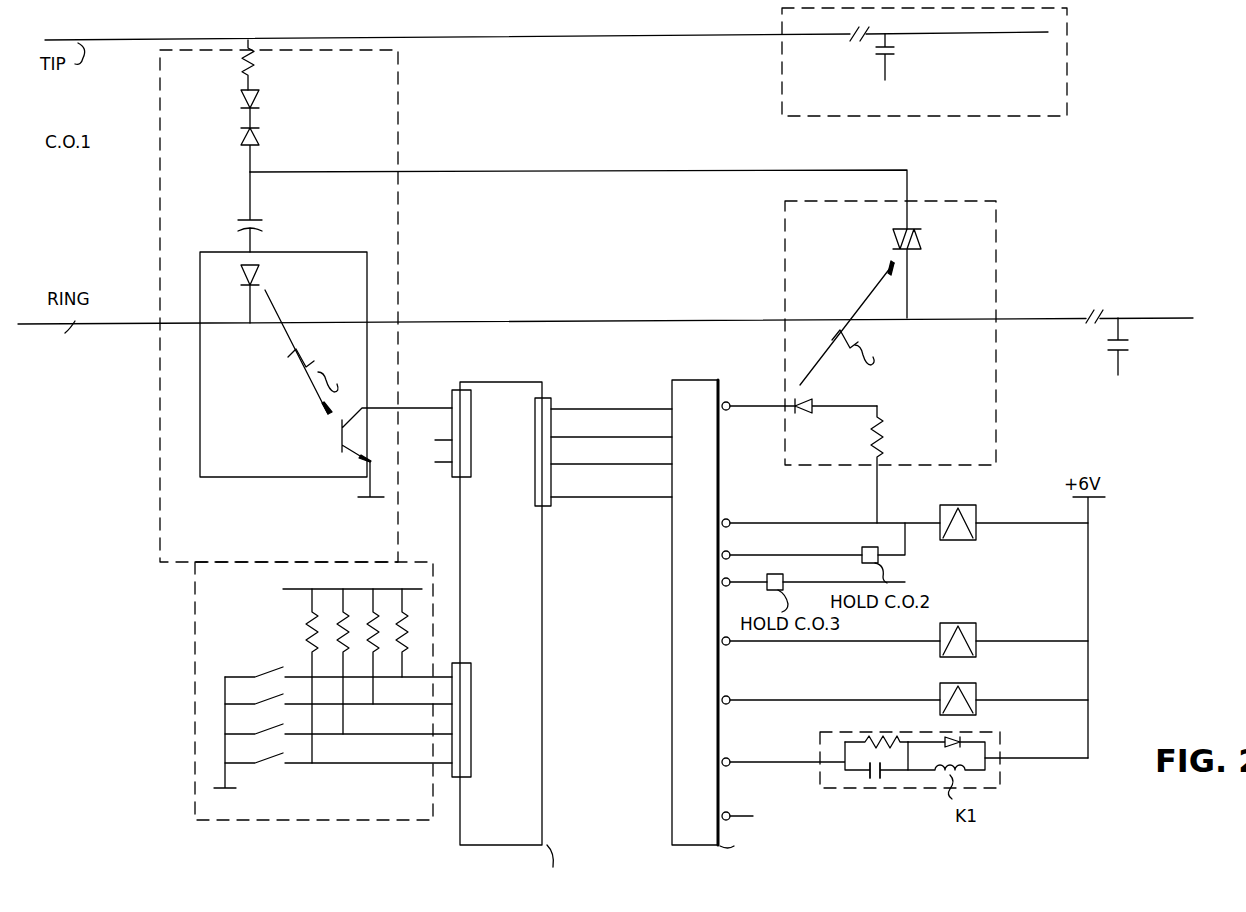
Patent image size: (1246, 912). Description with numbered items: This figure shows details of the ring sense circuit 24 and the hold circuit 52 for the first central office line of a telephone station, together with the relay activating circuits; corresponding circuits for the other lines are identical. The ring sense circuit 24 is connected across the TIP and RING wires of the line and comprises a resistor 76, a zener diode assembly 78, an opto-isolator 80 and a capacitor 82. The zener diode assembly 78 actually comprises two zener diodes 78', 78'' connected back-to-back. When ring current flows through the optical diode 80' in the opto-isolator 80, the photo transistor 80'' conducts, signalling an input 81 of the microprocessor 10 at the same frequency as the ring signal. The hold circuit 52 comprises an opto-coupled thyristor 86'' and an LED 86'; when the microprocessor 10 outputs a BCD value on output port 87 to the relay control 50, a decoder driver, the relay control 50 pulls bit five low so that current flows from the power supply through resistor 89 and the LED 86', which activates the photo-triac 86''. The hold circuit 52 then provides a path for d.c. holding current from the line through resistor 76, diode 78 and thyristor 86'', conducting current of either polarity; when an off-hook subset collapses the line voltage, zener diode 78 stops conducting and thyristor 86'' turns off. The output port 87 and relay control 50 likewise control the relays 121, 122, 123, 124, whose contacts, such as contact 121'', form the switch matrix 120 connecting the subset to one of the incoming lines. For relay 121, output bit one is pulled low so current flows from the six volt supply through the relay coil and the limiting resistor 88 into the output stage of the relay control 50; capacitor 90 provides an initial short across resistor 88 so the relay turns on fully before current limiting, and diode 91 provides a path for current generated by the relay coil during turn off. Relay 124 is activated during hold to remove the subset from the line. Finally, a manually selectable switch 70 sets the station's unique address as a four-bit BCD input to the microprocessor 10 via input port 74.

The microprocessor 10 is at (512, 829).
The ring sense circuit 24 is at (398, 88).
The relay control 50 is at (691, 381).
The hold circuit 52 is at (983, 272).
The manually selectable switch 70 is at (200, 607).
The input port 74 is at (466, 726).
The resistor 76 is at (256, 60).
The zener diode assembly 78 is at (252, 130).
The zener diode 78' is at (228, 102).
The zener diode 78'' is at (227, 140).
The opto-isolator 80 is at (375, 385).
The optical diode 80' is at (279, 294).
The photo transistor 80'' is at (369, 452).
The input 81 is at (454, 391).
The capacitor 82 is at (265, 226).
The LED 86' is at (803, 421).
The opto-coupled thyristor 86'' is at (878, 273).
The output port 87 is at (545, 398).
The limiting resistor 88 is at (878, 738).
The resistor 89 is at (884, 432).
The capacitor 90 is at (870, 780).
The diode 91 is at (958, 746).
The switch matrix 120 is at (792, 60).
The relay 121 is at (933, 407).
The contact 121'' is at (1086, 348).
The relay 122 is at (976, 688).
The relay 123 is at (976, 630).
The relay 124 is at (996, 528).